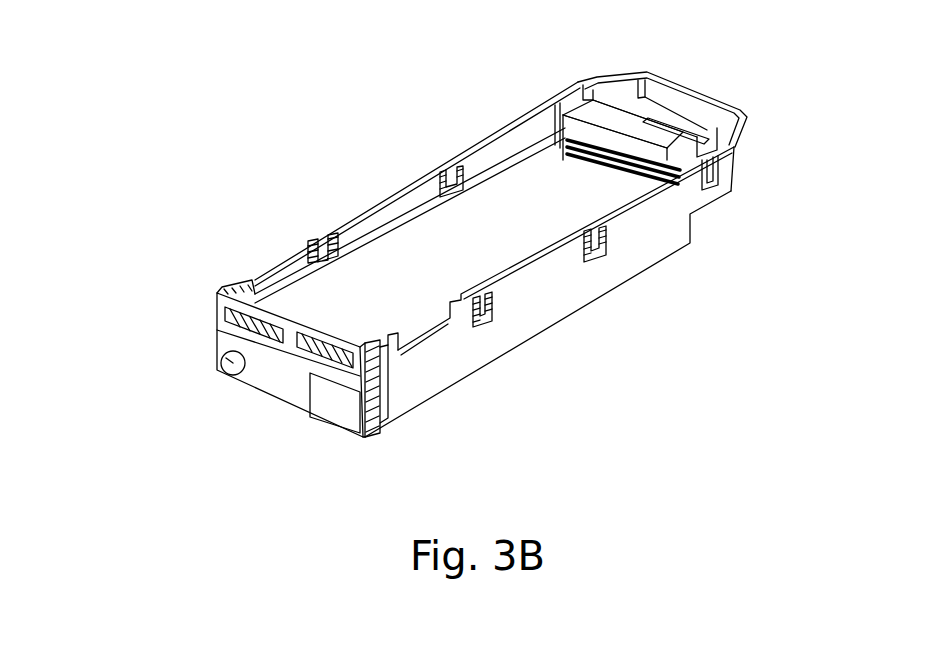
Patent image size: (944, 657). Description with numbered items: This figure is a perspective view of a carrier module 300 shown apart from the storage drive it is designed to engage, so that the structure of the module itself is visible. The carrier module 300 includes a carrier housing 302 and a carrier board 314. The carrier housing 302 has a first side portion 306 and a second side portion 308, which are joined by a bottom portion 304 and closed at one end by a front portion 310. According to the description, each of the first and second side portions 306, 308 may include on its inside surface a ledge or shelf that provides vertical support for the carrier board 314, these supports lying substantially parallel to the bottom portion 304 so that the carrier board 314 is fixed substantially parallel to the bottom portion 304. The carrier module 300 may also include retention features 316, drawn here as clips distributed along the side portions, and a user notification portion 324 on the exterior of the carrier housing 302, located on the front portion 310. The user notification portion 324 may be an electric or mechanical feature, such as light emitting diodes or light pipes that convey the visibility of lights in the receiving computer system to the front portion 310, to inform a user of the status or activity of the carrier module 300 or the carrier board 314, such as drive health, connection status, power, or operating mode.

The carrier module 300 is at (197, 97).
The carrier housing 302 is at (712, 250).
The bottom portion 304 is at (438, 389).
The first side portion 306 is at (580, 280).
The second side portion 308 is at (542, 131).
The front portion 310 is at (218, 327).
The carrier board 314 is at (462, 233).
The retention features 316 is at (310, 240).
The user notification portion 324 is at (218, 372).